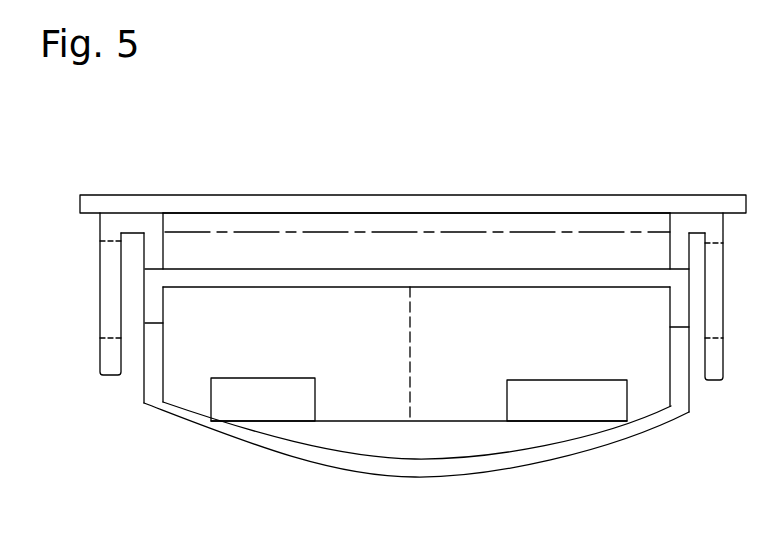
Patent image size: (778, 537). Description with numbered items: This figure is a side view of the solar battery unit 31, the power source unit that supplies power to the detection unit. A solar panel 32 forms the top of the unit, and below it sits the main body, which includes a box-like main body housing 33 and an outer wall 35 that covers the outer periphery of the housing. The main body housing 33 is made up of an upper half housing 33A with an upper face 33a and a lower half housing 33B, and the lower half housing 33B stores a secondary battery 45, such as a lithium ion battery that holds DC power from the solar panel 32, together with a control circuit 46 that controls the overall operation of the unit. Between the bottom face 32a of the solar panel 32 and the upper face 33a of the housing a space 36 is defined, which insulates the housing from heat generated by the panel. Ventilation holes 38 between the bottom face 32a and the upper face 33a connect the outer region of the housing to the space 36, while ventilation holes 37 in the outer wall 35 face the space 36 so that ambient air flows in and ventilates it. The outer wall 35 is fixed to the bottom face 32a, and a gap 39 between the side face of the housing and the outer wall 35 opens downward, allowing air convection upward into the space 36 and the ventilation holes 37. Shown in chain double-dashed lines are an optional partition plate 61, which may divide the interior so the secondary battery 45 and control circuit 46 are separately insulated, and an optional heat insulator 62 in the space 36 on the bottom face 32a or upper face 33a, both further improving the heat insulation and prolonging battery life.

The solar battery unit 31 is at (270, 133).
The solar panel 32 is at (532, 205).
The bottom face of the solar panel 32a is at (262, 218).
The main body housing 33 is at (660, 447).
The upper half housing 33A is at (153, 307).
The lower half housing 33B is at (157, 393).
The upper face of the main body housing 33a is at (582, 273).
The outer wall 35 is at (106, 355).
The space 36 is at (362, 255).
The ventilation holes 37 is at (110, 280).
The ventilation holes 38 is at (148, 256).
The gap 39 is at (133, 355).
The secondary battery 45 is at (268, 403).
The control circuit 46 is at (567, 408).
The partition plate 61 is at (415, 352).
The heat insulator 62 is at (472, 225).